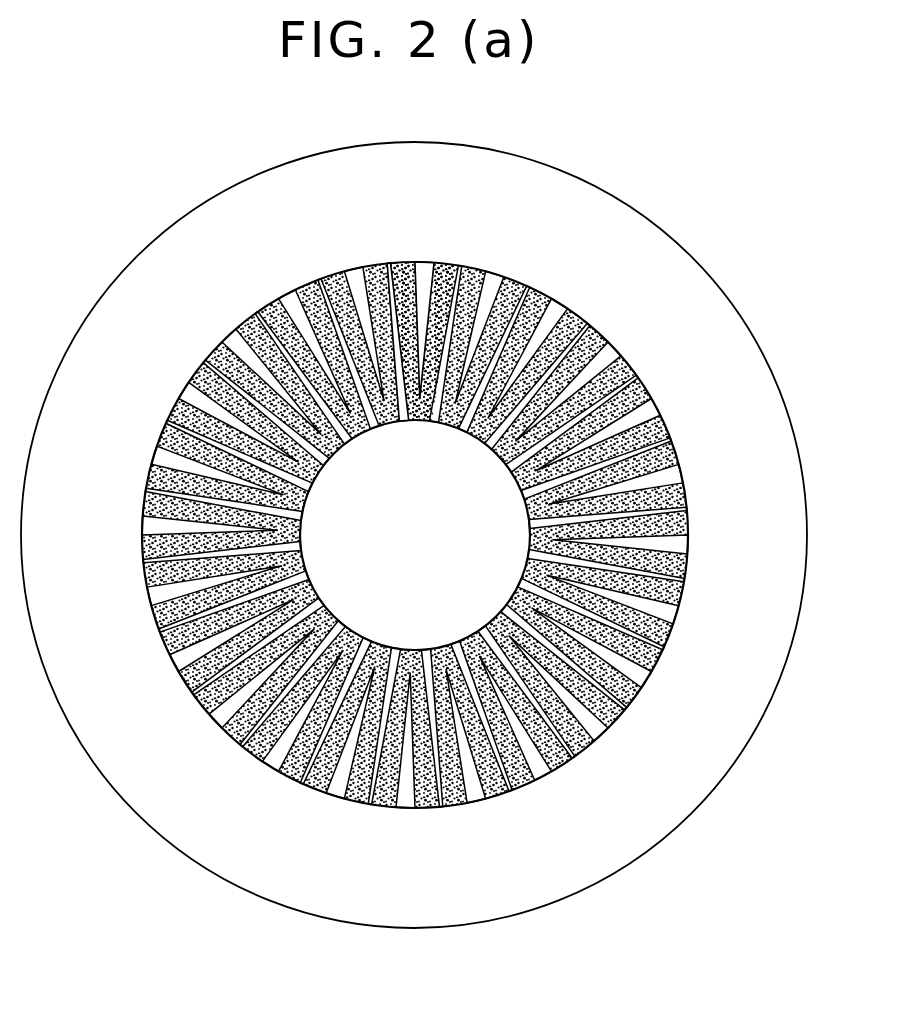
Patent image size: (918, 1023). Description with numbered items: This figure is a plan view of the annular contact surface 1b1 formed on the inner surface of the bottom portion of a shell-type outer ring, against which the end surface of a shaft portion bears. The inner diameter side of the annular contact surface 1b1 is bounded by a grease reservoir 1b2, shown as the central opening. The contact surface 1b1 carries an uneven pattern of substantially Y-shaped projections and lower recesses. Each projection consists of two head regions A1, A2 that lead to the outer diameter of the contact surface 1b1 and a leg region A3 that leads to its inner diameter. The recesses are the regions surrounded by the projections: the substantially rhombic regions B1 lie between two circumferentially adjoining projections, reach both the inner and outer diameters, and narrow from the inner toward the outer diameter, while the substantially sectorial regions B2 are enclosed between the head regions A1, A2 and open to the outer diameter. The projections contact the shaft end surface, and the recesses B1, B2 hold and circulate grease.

The annular contact surface 1b1 is at (150, 430).
The grease reservoir 1b2 is at (446, 563).
The region forming Y's head of projection A1 is at (412, 328).
The region forming Y's head of projection A2 is at (430, 330).
The region forming Y's leg of projection A3 is at (423, 402).
The rhombic recess region B1 is at (398, 410).
The sectorial recess region B2 is at (421, 300).